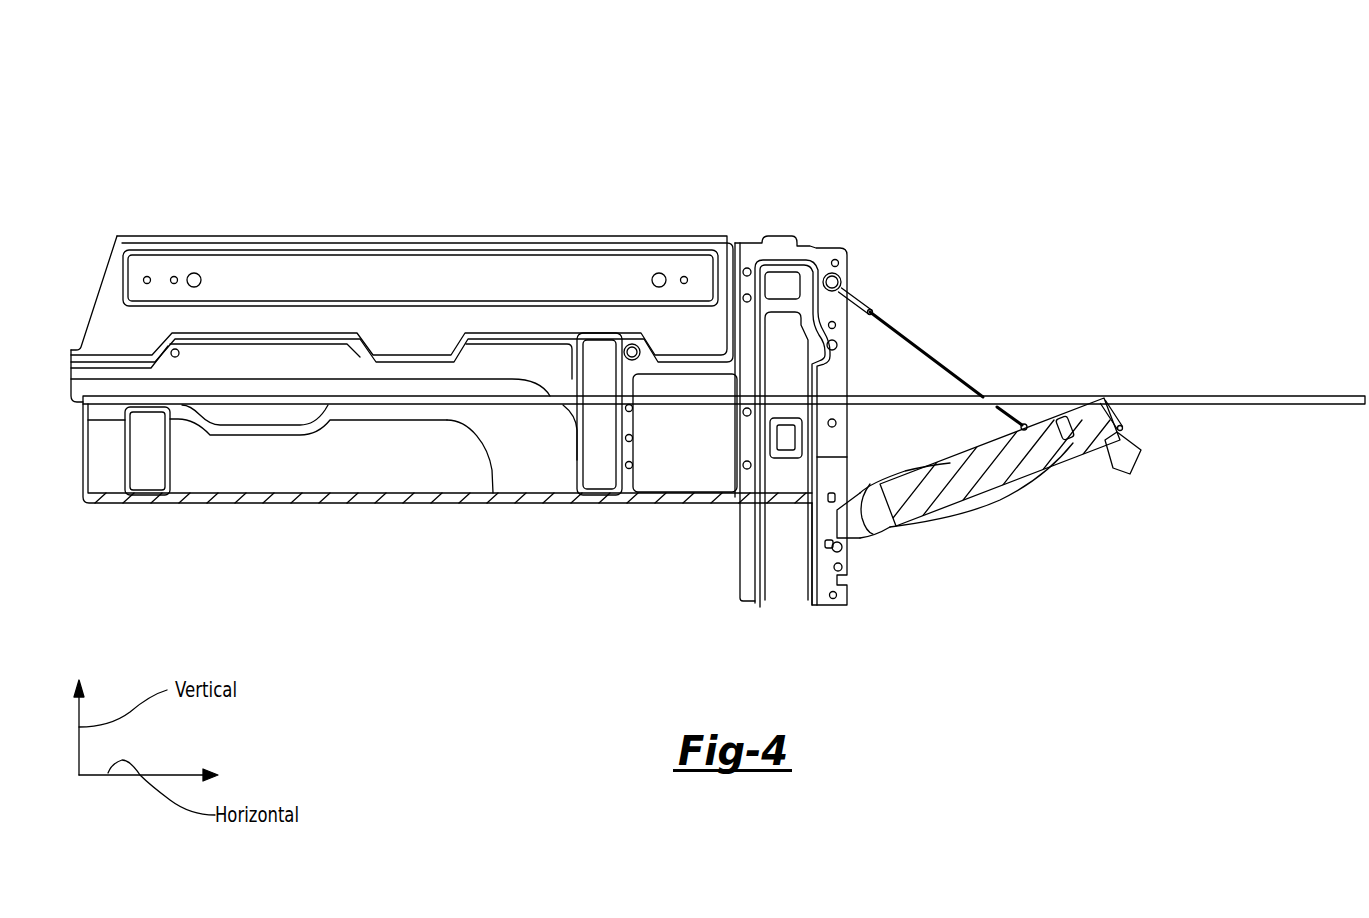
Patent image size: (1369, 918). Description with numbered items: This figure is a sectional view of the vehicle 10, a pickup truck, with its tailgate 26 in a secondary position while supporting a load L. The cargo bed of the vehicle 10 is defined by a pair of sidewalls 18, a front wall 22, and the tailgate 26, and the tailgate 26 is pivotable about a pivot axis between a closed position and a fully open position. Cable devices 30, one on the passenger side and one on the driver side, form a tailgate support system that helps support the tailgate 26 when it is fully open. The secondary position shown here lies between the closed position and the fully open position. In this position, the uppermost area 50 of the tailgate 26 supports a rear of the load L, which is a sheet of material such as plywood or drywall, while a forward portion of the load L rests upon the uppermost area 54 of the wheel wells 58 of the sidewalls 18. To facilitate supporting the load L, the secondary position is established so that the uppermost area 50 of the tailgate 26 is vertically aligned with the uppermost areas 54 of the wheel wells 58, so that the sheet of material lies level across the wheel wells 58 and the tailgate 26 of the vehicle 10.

The vehicle 10 is at (698, 140).
The sidewalls 18 is at (520, 280).
The load L is at (433, 400).
The front wall 22 is at (80, 433).
The tailgate 26 is at (1123, 433).
The cable devices 30 is at (895, 327).
The uppermost area of the tailgate 50 is at (1106, 400).
The uppermost area of wheel wells 54 is at (357, 408).
The wheel wells 58 is at (270, 459).